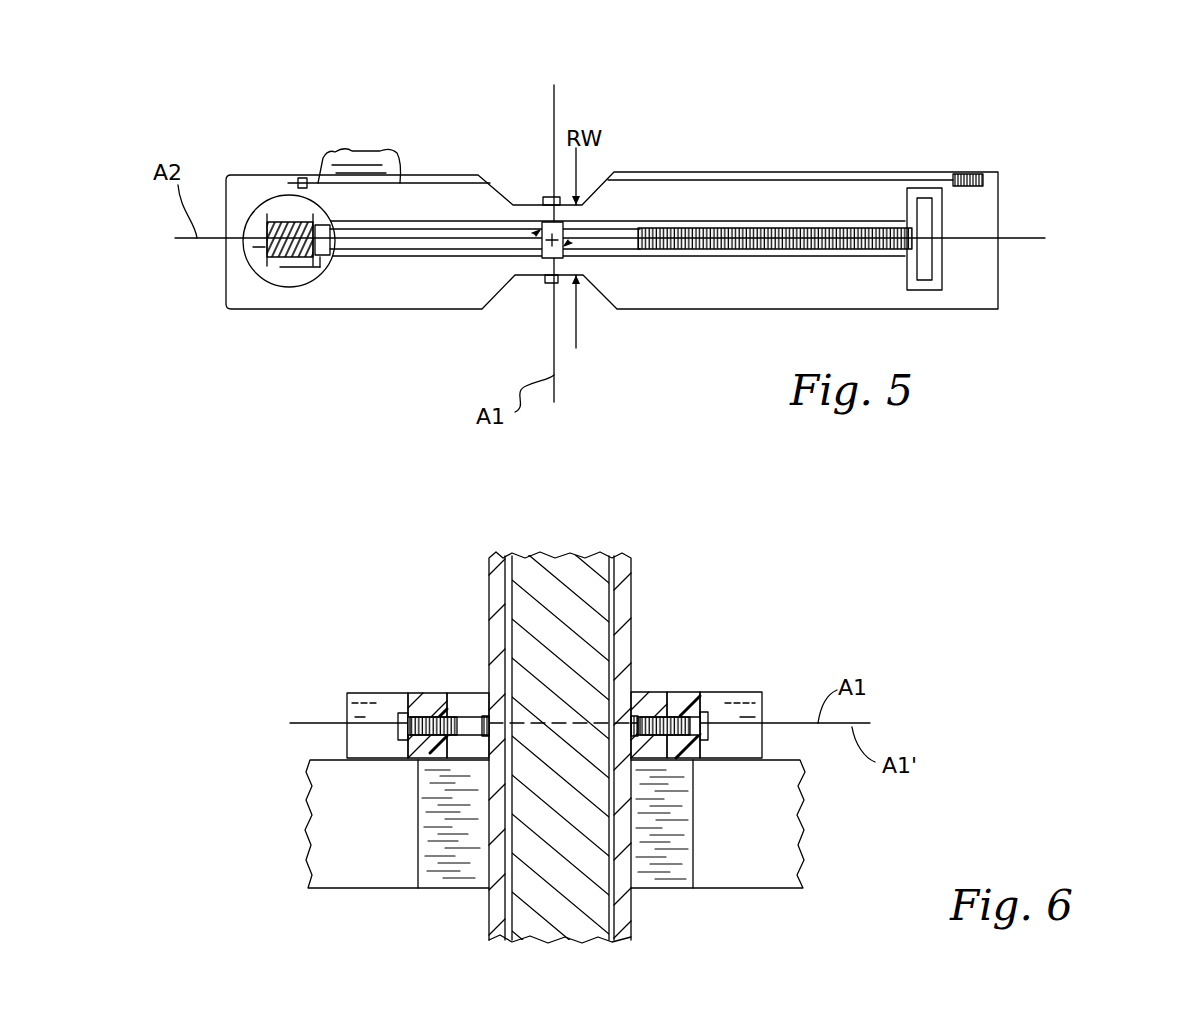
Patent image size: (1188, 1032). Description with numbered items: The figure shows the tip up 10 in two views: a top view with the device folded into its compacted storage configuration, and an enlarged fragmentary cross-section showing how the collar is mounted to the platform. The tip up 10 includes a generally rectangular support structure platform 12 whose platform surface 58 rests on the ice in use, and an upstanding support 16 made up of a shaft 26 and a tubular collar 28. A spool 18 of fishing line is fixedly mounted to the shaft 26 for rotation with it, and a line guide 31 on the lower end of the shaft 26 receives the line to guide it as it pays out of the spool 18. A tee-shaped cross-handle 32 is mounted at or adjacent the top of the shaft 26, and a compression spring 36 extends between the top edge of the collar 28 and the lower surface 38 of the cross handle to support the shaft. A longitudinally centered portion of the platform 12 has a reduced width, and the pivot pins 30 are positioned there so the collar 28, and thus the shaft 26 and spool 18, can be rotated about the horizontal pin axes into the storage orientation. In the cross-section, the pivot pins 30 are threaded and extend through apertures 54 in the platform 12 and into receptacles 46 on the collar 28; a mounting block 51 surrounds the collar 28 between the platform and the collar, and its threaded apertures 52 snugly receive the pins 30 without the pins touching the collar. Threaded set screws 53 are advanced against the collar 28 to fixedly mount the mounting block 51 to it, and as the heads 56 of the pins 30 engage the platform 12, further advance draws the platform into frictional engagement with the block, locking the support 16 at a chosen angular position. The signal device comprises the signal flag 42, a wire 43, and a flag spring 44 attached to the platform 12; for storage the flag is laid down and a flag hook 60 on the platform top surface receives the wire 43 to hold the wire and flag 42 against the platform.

In FIG. 5, the tip up 10 is at (1072, 105).
In FIG. 5, the support structure platform 12 is at (224, 288).
In FIG. 6, the support structure platform 12 is at (764, 700).
In FIG. 5, the upstanding support 16 is at (622, 226).
In FIG. 5, the spool 18 is at (265, 227).
In FIG. 6, the shaft 26 is at (608, 597).
In FIG. 5, the collar 28 is at (442, 250).
In FIG. 6, the collar 28 is at (638, 913).
In FIG. 5, the pivot pins 30 is at (545, 285).
In FIG. 6, the pivot pins 30 is at (415, 697).
In FIG. 5, the line guide 31 is at (320, 283).
In FIG. 5, the tee-shaped cross-handle 32 is at (938, 256).
In FIG. 5, the compression spring 36 is at (763, 249).
In FIG. 5, the lower surface of the cross handle 38 is at (915, 208).
In FIG. 5, the signal flag 42 is at (358, 150).
In FIG. 5, the wire 43 is at (517, 178).
In FIG. 5, the flag spring 44 is at (966, 173).
In FIG. 5, the receptacles 46 is at (290, 283).
In FIG. 6, the mounting block 51 is at (482, 686).
In FIG. 6, the threaded apertures 52 is at (455, 720).
In FIG. 6, the threaded set screws 53 is at (635, 713).
In FIG. 6, the apertures 54 is at (680, 713).
In FIG. 6, the heads of pins 56 is at (400, 693).
In FIG. 6, the platform surface 58 is at (713, 763).
In FIG. 5, the flag hook 60 is at (301, 178).